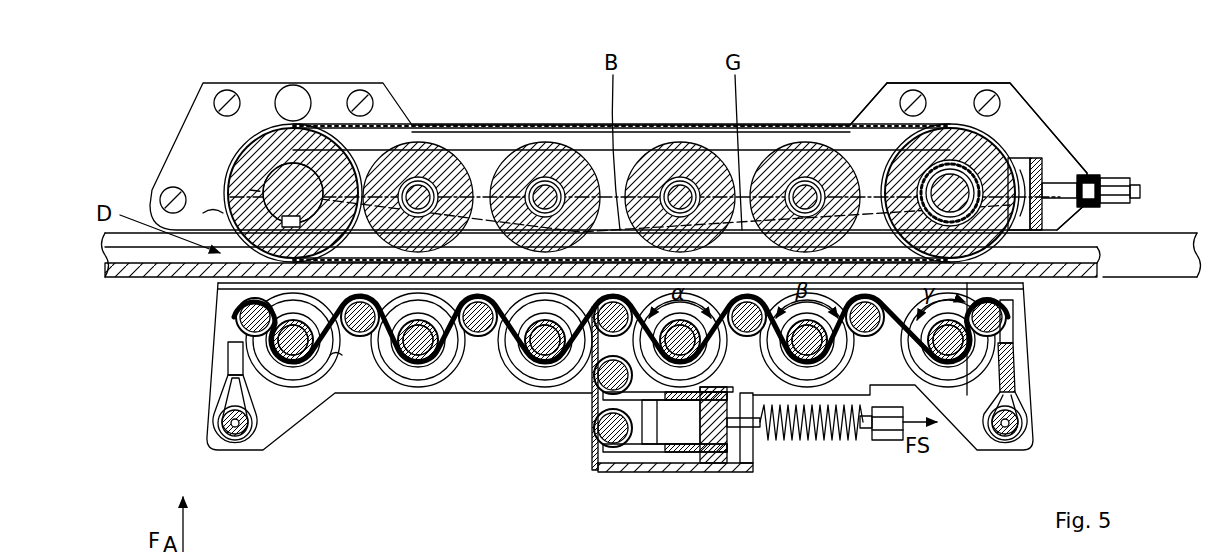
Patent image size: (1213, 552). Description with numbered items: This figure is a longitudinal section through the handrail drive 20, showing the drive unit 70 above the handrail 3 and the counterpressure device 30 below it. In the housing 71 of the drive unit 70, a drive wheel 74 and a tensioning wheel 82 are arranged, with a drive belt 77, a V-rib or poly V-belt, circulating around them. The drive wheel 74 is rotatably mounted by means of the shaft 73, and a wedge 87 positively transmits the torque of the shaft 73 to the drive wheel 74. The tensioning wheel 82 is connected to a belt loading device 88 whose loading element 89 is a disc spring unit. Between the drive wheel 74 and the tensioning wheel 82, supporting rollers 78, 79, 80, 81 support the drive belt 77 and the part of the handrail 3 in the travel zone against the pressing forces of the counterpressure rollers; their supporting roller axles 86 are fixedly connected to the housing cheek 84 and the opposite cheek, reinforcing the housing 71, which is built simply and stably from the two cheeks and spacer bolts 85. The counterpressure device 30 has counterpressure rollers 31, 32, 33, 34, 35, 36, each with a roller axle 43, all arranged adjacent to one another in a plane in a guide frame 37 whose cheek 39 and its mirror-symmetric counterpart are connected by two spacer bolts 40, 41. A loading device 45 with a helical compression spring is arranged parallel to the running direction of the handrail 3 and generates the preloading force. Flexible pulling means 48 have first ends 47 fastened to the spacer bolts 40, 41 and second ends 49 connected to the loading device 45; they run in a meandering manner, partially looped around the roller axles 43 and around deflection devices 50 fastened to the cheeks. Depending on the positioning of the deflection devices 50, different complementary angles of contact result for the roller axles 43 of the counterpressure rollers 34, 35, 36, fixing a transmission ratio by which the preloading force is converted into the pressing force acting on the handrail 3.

The handrail 3 is at (1160, 280).
The handrail drive 20 is at (482, 70).
The counterpressure device 30 is at (541, 512).
The counterpressure roller 31 is at (305, 390).
The counterpressure roller 32 is at (405, 393).
The counterpressure roller 33 is at (517, 388).
The counterpressure roller 34 is at (655, 385).
The counterpressure roller 35 is at (835, 390).
The counterpressure roller 36 is at (955, 398).
The guide frame 37 is at (1047, 420).
The cheek 39 is at (220, 350).
The spacer bolt 40 is at (1020, 430).
The spacer bolt 41 is at (218, 422).
The roller axle 43 is at (285, 378).
The loading device 45 is at (718, 452).
The first end 47 is at (223, 392).
The flexible pulling means 48 is at (336, 358).
The second end 49 is at (690, 445).
The deflection device 50 is at (243, 314).
The drive unit 70 is at (175, 103).
The housing 71 is at (1062, 135).
The shaft 73 is at (322, 135).
The drive wheel 74 is at (272, 150).
The drive belt 77 is at (600, 125).
The supporting roller 78 is at (425, 147).
The supporting roller 79 is at (522, 150).
The supporting roller 80 is at (700, 145).
The supporting roller 81 is at (790, 147).
The tensioning wheel 82 is at (955, 140).
The housing cheek 84 is at (1023, 118).
The spacer bolt 85 is at (227, 97).
The supporting roller axle 86 is at (420, 192).
The wedge 87 is at (290, 200).
The belt loading device 88 is at (1147, 188).
The loading element 89 is at (1088, 178).